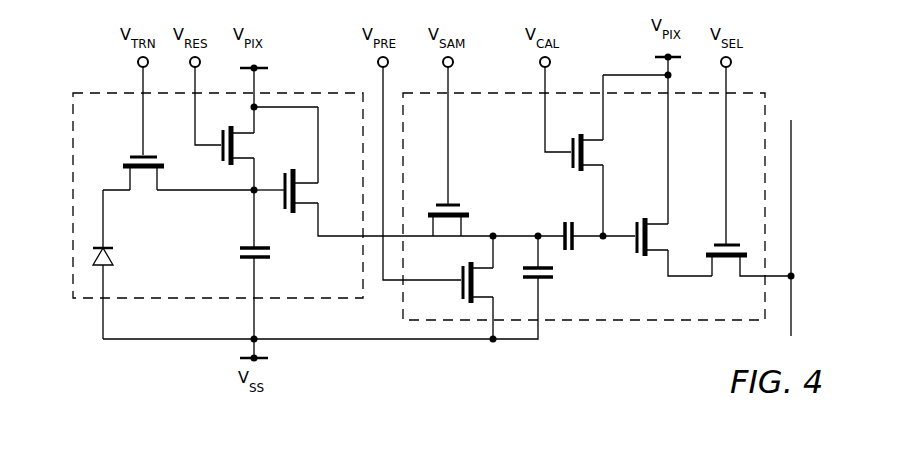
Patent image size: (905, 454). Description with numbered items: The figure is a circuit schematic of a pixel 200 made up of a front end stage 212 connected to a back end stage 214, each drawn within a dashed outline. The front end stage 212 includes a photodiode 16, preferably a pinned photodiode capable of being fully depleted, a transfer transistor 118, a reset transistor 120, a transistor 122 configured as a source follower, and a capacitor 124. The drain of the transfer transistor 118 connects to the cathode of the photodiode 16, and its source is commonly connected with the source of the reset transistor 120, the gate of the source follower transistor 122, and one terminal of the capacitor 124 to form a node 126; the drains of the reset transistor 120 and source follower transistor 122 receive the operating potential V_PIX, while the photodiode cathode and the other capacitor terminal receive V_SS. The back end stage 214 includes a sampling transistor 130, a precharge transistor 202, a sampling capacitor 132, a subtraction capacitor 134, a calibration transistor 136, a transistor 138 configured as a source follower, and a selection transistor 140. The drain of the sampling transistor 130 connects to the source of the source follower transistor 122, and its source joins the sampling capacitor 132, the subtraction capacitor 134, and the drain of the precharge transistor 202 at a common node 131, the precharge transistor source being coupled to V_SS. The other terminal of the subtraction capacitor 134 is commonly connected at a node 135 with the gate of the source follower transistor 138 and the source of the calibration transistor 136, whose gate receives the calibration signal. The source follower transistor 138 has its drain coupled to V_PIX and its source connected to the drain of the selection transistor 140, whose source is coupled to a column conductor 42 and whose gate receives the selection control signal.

The front end stage 212 is at (106, 93).
The back end stage 214 is at (765, 96).
The column conductor 42 is at (791, 128).
The transfer transistor 118 is at (144, 195).
The photodiode 16 is at (113, 249).
The reset transistor 120 is at (245, 147).
The source follower transistor 122 is at (305, 183).
The capacitor 124 is at (240, 258).
The node 126 is at (250, 194).
The sampling transistor 130 is at (440, 204).
The sample node 131 is at (494, 232).
The sampling capacitor 132 is at (551, 281).
The subtraction capacitor 134 is at (571, 221).
The calibration node 135 is at (602, 240).
The calibration transistor 136 is at (596, 150).
The source follower transistor 138 is at (665, 238).
The selection transistor 140 is at (725, 274).
The precharge transistor 202 is at (462, 268).
The pixel 200 is at (693, 367).